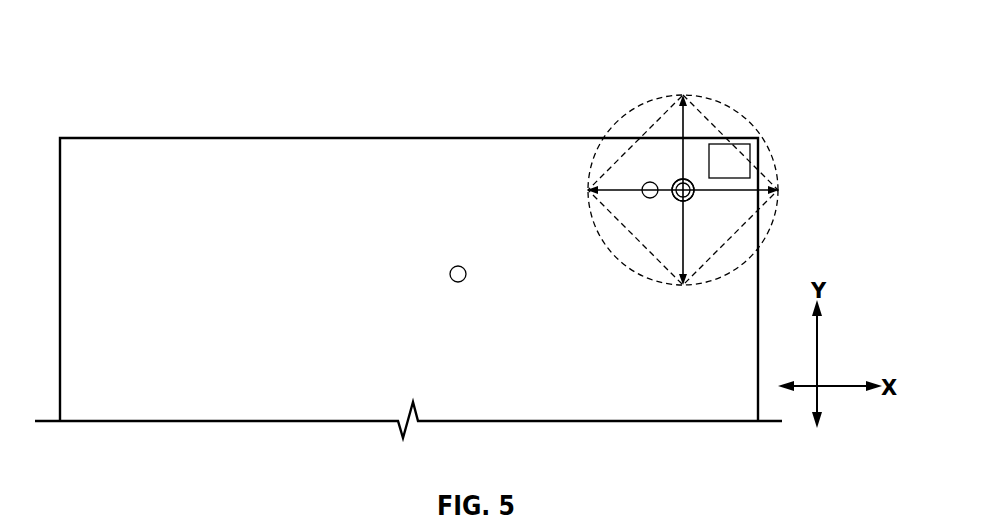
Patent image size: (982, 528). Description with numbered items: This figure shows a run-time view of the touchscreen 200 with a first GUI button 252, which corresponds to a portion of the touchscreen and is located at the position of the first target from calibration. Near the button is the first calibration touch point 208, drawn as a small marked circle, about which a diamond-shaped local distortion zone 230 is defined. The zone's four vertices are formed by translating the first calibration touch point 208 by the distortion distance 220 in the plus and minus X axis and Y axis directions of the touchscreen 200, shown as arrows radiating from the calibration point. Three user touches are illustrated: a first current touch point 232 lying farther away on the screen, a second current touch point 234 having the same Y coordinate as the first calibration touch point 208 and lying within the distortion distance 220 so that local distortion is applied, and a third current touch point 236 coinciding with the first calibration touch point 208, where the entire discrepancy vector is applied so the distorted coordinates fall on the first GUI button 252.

The touchscreen 200 is at (125, 137).
The first calibration touch point 208 is at (673, 187).
The distortion distance 220 is at (686, 132).
The diamond-shaped local distortion zone 230 is at (768, 136).
The first current touch point 232 is at (458, 266).
The second current touch point 234 is at (648, 198).
The third current touch point 236 is at (685, 201).
The first GUI button 252 is at (754, 156).